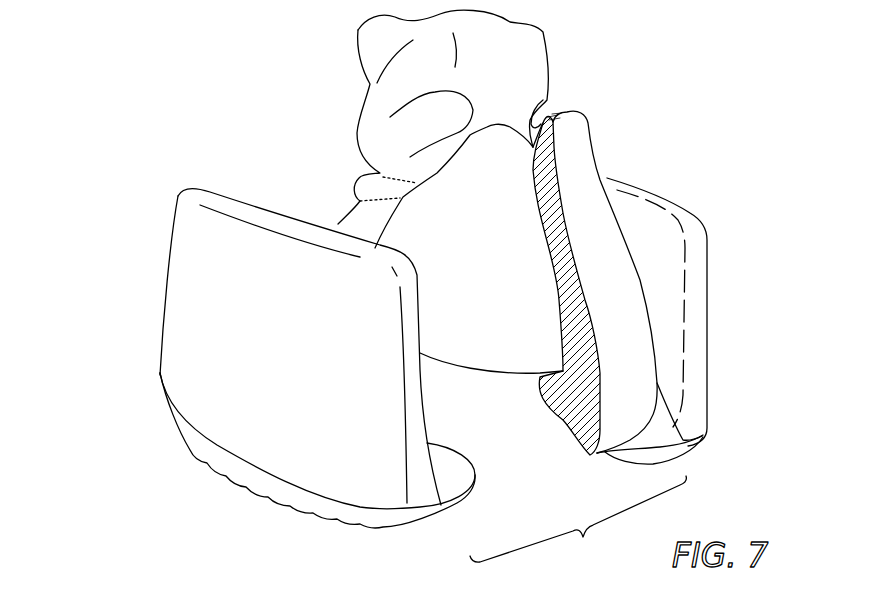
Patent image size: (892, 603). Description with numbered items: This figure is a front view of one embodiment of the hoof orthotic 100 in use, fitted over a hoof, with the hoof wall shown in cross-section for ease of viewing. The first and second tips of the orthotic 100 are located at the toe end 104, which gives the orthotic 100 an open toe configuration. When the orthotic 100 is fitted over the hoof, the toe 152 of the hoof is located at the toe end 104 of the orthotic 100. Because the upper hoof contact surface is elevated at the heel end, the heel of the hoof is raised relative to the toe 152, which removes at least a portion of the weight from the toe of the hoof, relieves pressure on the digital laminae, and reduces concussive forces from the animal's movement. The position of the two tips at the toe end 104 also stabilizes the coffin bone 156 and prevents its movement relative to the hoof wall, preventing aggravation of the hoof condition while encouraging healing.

The orthotic 100 is at (101, 169).
The toe end 104 is at (578, 521).
The toe 152 is at (633, 387).
The coffin bone 156 is at (522, 297).